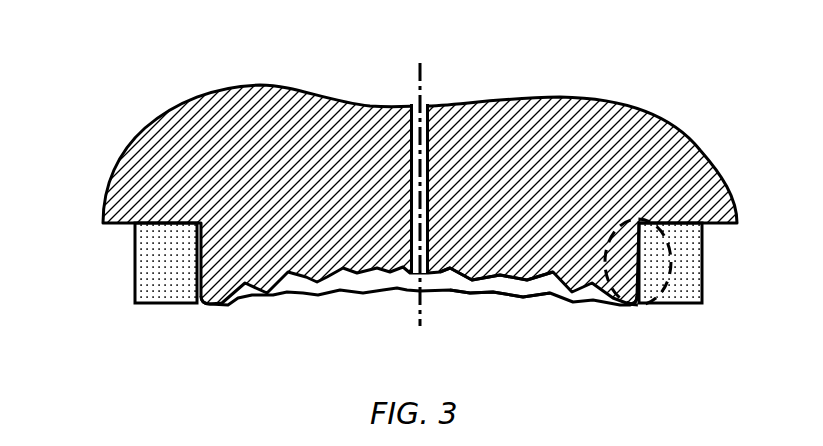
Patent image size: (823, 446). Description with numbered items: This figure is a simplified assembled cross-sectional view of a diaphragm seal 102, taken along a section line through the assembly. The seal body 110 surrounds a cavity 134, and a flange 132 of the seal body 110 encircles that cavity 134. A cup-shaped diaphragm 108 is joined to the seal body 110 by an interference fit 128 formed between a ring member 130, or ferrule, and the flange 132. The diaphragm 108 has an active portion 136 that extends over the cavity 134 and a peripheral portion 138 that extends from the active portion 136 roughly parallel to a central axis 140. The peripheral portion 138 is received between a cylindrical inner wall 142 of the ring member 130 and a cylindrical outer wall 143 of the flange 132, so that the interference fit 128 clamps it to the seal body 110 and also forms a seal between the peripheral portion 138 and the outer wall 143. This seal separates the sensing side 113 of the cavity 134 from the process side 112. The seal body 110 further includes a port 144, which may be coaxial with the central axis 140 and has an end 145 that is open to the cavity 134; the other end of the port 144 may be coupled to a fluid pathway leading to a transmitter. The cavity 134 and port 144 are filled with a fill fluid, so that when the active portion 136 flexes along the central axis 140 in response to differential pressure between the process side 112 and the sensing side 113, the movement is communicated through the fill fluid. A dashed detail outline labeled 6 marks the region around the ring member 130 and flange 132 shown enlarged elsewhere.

The diaphragm seal 102 is at (87, 45).
The seal body 110 is at (648, 128).
The sensing side 113 is at (501, 266).
The cavity 134 is at (460, 273).
The peripheral portion 138 is at (203, 249).
The central axis 140 is at (422, 73).
The port 144 is at (415, 121).
The ring member 130 is at (148, 262).
The flange 132 is at (655, 303).
The detail region 6 is at (667, 256).
The cylindrical outer wall 143 is at (186, 277).
The cylindrical inner wall 142 is at (213, 265).
The end of the port 145 is at (400, 277).
The active portion 136 is at (477, 296).
The diaphragm 108 is at (560, 298).
The interference fit 128 is at (190, 320).
The process side 112 is at (660, 358).